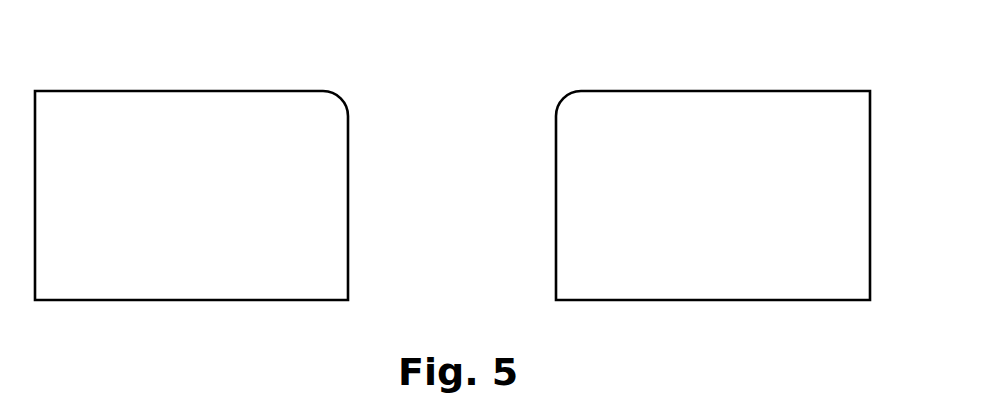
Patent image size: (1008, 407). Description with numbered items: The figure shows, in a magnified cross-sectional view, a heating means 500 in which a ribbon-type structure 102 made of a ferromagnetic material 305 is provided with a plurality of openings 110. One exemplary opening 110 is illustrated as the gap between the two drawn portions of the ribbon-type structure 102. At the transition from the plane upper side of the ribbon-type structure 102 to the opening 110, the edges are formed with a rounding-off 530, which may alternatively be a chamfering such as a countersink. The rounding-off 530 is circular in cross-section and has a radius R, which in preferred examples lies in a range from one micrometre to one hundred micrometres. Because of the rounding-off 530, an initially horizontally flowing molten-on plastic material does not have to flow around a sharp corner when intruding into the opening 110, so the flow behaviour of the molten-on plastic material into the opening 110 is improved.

The ribbon-type structure 102 is at (452, 195).
The ferromagnetic material 305 is at (247, 206).
The opening 110 is at (470, 208).
The rounding-off 530 is at (541, 88).
The radius R is at (572, 104).
The heating means 500 is at (858, 56).